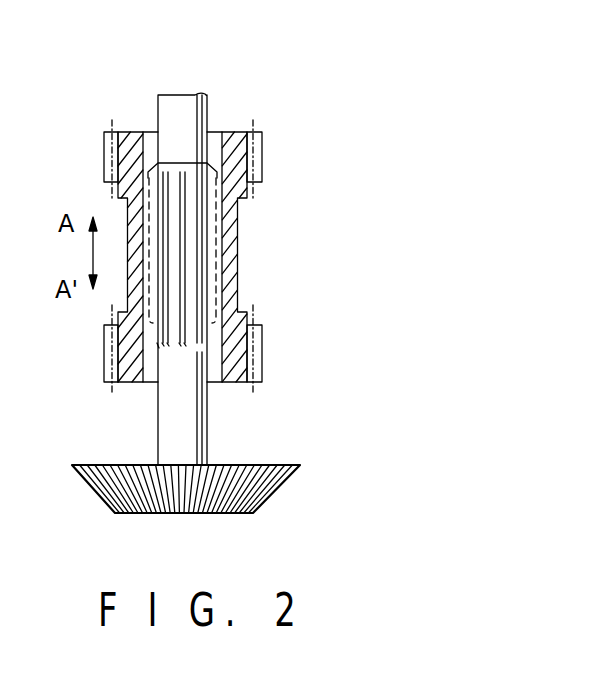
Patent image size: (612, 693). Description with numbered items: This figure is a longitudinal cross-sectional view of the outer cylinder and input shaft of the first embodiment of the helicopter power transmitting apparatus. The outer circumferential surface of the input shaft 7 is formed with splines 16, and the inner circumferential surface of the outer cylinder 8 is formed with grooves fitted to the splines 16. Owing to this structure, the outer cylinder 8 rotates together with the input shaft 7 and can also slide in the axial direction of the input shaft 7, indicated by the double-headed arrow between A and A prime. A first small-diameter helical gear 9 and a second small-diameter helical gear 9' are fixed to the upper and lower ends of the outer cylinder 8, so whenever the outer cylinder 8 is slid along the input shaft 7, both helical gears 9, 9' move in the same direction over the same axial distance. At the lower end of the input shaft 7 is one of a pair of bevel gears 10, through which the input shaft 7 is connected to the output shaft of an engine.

The input shaft 7 is at (171, 103).
The outer cylinder 8 is at (230, 220).
The first small-diameter helical gear 9 is at (183, 130).
The second small-diameter helical gear 9' is at (218, 350).
The bevel gear 10 is at (287, 482).
The splines 16 is at (228, 247).